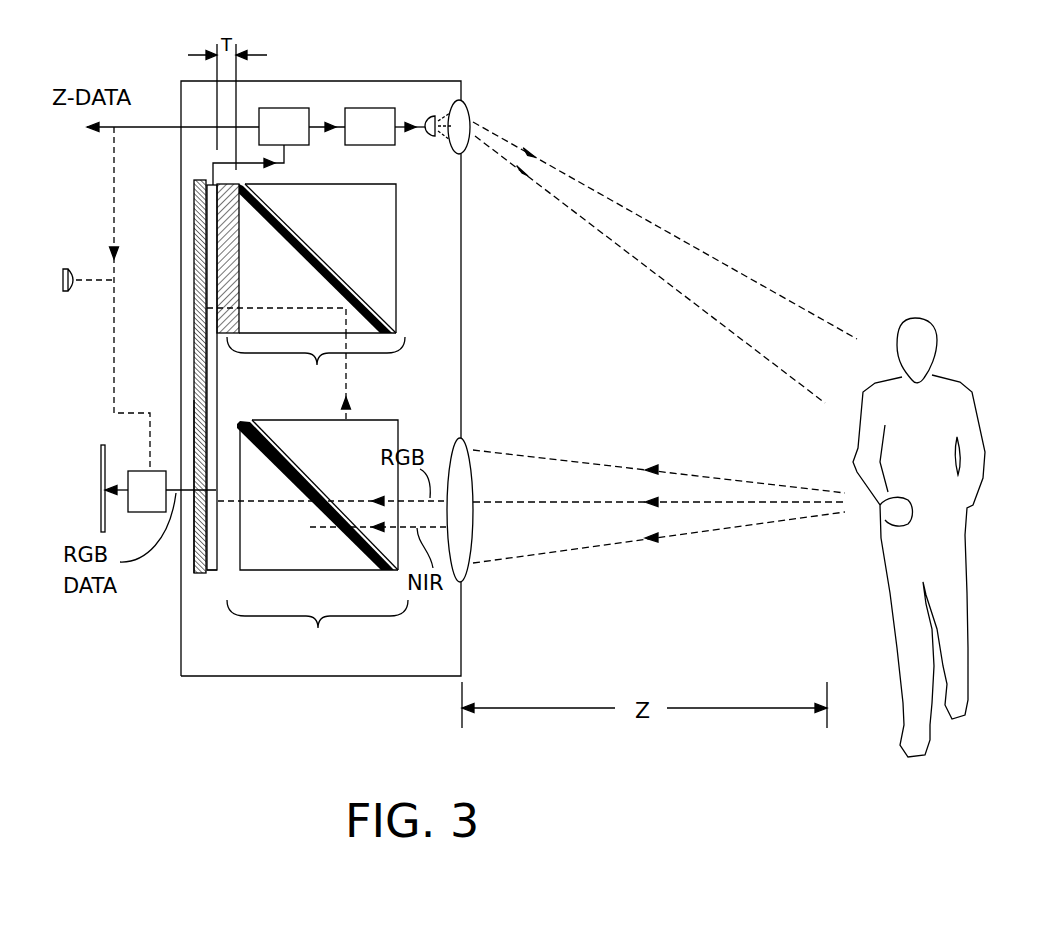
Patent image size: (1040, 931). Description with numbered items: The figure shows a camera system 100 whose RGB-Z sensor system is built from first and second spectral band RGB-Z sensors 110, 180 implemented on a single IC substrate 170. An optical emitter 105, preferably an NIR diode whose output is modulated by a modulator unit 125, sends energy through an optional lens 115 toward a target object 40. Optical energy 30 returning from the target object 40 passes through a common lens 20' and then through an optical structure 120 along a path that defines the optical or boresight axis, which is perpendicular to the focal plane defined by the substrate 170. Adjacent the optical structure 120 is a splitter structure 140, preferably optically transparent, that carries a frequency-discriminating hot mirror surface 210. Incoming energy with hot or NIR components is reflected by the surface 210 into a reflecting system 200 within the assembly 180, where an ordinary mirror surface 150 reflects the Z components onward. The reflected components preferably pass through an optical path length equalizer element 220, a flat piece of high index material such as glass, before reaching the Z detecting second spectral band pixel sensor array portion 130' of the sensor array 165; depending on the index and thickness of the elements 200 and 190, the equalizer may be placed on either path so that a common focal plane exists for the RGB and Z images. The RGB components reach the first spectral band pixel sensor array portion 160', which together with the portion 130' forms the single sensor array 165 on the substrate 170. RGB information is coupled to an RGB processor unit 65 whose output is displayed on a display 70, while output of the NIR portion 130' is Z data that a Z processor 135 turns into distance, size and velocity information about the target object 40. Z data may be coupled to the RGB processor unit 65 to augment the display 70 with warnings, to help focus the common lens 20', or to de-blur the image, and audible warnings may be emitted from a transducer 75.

The camera system 100 is at (332, 64).
The lens 115 is at (463, 117).
The optical emitter 105 is at (432, 137).
The Z processor 135 is at (303, 138).
The modulator unit 125 is at (389, 138).
The mirror surface 150 is at (257, 217).
The optical path length equalizer element 220 is at (206, 245).
The second spectral band pixel sensor array portion 130' is at (177, 377).
The transducer 75 is at (83, 290).
The IC substrate 170 is at (197, 400).
The hot mirror surface 210 is at (283, 487).
The second spectral band RGB-Z sensor assembly 180 is at (316, 367).
The optical element 190 is at (363, 227).
The reflecting system 200 is at (308, 297).
The optical structure 120 is at (331, 456).
The splitter structure 140 is at (310, 526).
The first spectral band RGB-Z sensor 110 is at (317, 630).
The RGB processor unit 65 is at (160, 501).
The display 70 is at (93, 477).
The first spectral band pixel sensor array portion 160' is at (168, 514).
The sensor array 165 is at (213, 588).
The optical energy 30 is at (578, 462).
The common lens 20' is at (490, 510).
The target object 40 is at (877, 395).